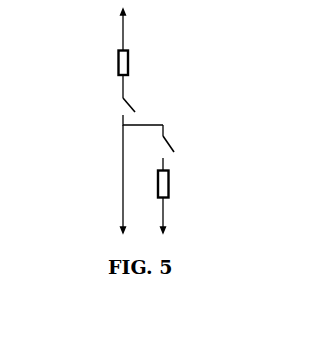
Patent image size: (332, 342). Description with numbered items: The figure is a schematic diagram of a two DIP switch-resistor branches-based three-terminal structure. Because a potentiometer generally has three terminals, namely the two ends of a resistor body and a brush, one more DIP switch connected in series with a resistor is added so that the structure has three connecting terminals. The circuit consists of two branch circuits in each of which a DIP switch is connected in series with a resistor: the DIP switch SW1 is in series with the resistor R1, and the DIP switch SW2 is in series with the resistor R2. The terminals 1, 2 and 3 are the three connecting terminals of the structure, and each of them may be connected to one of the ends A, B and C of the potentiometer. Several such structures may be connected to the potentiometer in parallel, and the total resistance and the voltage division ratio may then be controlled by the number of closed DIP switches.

The terminal 1 is at (117, 29).
The terminal 2 is at (170, 217).
The terminal 3 is at (115, 180).
The resistor R1 is at (105, 64).
The resistor R2 is at (184, 178).
The DIP switch SW1 is at (101, 95).
The DIP switch SW2 is at (181, 138).